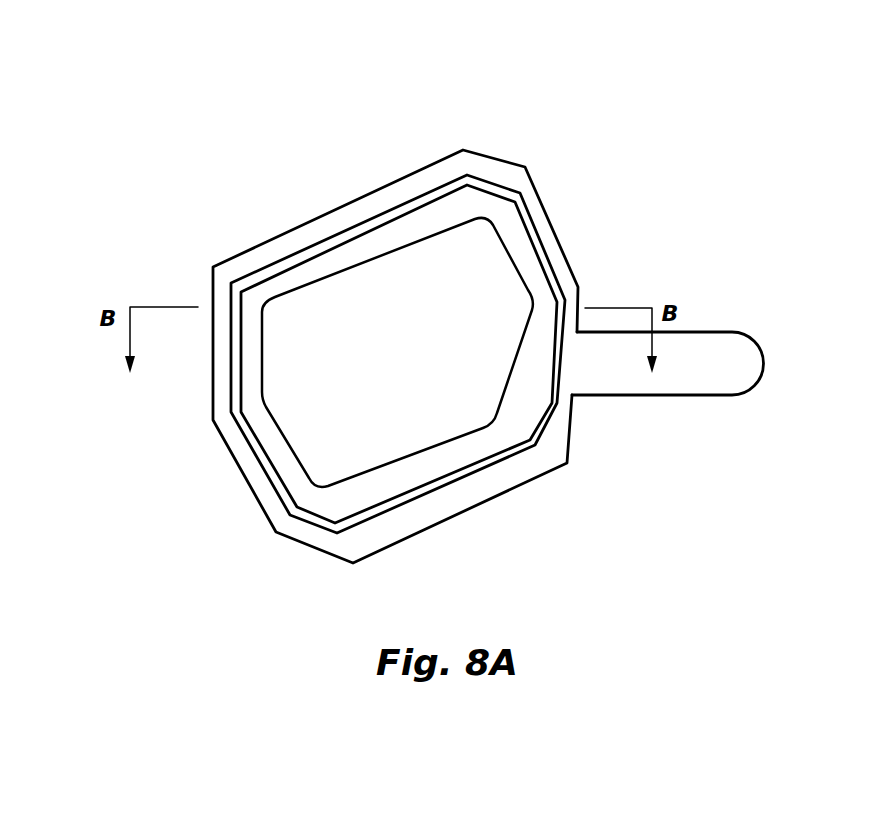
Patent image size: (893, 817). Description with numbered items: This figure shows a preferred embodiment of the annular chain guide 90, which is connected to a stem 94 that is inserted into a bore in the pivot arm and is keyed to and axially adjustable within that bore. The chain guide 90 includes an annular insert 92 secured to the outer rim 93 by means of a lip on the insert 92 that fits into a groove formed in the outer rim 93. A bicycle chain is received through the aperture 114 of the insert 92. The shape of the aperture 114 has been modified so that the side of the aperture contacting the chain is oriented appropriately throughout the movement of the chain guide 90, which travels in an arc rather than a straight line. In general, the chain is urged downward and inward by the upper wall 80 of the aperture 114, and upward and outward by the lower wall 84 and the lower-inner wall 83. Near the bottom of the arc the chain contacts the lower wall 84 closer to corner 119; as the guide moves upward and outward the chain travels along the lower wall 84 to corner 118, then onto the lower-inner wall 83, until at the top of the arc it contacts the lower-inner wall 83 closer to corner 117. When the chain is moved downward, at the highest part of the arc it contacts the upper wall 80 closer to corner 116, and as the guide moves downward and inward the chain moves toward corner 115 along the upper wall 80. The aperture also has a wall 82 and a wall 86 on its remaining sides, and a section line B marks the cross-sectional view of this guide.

The chain guide 90 is at (362, 134).
The upper wall 80 is at (318, 282).
The side wall 82 is at (513, 262).
The lower-inner wall 83 is at (510, 390).
The lower wall 84 is at (400, 465).
The side wall 86 is at (273, 430).
The annular insert 92 is at (320, 505).
The outer rim 93 is at (272, 500).
The stem 94 is at (722, 345).
The aperture 114 is at (425, 345).
The corner 115 is at (475, 217).
The corner 116 is at (265, 302).
The corner 117 is at (533, 303).
The corner 118 is at (492, 427).
The corner 119 is at (322, 490).